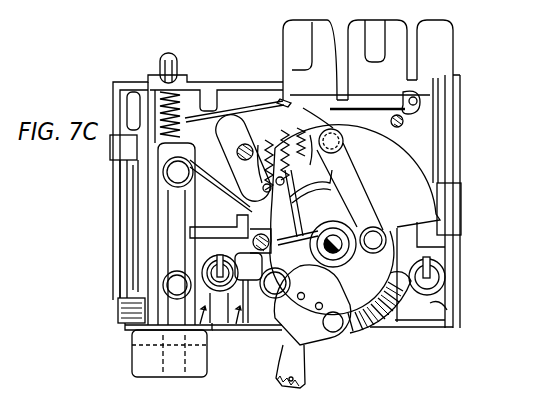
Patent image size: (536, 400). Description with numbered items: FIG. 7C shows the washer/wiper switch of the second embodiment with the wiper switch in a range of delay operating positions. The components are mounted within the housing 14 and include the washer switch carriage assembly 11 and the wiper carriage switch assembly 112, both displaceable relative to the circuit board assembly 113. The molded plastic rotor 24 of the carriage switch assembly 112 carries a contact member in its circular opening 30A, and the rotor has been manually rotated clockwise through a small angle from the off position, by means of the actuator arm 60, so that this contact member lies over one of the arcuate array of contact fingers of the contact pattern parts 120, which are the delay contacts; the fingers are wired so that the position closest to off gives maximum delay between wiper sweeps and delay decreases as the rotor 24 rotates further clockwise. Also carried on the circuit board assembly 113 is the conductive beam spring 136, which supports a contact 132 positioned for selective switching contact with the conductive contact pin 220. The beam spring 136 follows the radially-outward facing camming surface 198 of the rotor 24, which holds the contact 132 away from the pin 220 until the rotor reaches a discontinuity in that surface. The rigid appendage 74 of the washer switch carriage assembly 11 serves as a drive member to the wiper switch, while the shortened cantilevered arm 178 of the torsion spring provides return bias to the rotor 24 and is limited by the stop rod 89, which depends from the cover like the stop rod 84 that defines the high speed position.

The housing 14 is at (108, 303).
The washer switch carriage assembly 11 is at (213, 362).
The circuit board assembly 113 is at (452, 48).
The conductive contact pin 220 is at (281, 100).
The contact 132 is at (294, 96).
The beam spring 136 is at (318, 114).
The contact pattern parts 120 is at (266, 132).
The stop rod 84 is at (228, 155).
The rigid appendage 74 is at (238, 222).
The cantilevered arm 178 is at (262, 232).
The circular opening 30A is at (343, 144).
The carriage switch assembly 112 is at (392, 199).
The camming surface 198 is at (401, 127).
The rotor 24 is at (363, 332).
The actuator arm 60 is at (303, 365).
The stop rod 89 is at (229, 273).